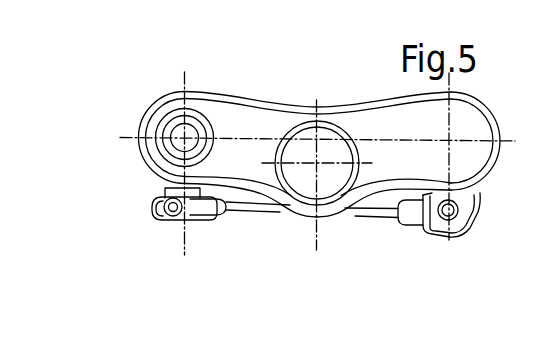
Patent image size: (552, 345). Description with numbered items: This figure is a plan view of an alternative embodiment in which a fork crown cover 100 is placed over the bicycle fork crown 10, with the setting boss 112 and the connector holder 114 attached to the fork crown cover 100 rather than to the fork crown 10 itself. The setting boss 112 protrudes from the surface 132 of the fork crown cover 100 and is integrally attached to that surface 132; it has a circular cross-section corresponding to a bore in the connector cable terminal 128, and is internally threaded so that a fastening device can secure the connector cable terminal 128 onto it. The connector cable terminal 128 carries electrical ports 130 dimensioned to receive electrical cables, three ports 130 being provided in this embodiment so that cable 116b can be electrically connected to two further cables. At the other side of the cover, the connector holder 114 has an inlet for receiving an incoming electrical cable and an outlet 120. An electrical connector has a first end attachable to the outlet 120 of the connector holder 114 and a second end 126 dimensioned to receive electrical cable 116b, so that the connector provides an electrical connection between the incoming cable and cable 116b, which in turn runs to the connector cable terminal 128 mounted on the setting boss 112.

The fork crown cover 100 is at (153, 96).
The bicycle fork crown 10 is at (147, 120).
The surface 132 is at (140, 147).
The setting boss 112 is at (160, 190).
The connector cable terminal 128 is at (195, 231).
The electrical ports 130 is at (213, 220).
The electrical cable 116b is at (356, 219).
The second end 126 is at (402, 223).
The connector holder 114 is at (460, 233).
The outlet 120 is at (473, 208).